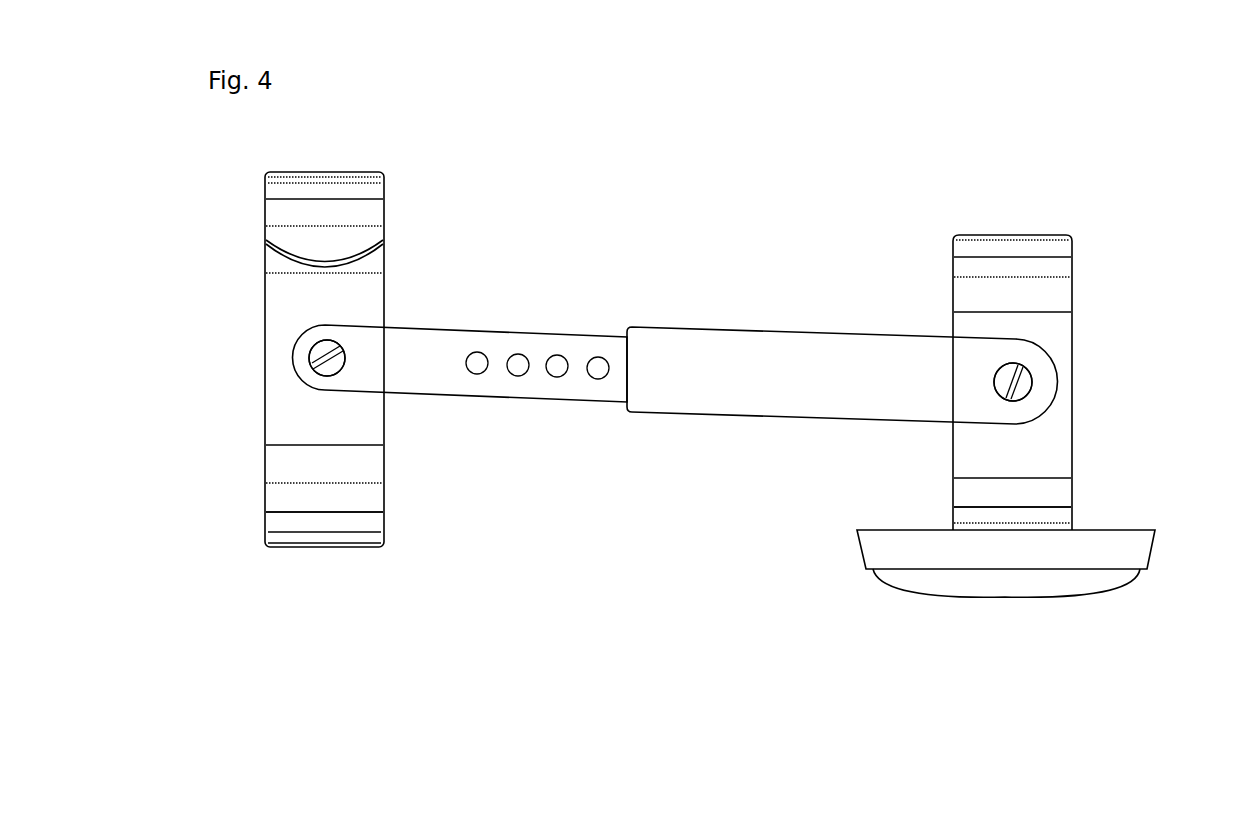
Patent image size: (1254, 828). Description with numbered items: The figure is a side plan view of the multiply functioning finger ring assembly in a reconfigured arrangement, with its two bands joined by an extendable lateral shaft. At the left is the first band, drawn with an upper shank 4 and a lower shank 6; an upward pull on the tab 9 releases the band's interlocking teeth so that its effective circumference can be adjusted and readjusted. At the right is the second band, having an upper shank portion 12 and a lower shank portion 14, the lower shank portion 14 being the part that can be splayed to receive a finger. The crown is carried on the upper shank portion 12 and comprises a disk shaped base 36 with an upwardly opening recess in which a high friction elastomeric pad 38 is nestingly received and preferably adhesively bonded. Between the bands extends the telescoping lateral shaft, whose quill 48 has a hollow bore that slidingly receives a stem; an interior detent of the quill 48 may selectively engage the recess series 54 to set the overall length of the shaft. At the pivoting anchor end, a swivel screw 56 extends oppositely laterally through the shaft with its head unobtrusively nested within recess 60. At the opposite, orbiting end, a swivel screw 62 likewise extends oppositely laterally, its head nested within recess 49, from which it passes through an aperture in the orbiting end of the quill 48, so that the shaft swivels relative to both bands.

The upper shank 4 is at (278, 277).
The lower shank 6 is at (333, 498).
The tab 9 is at (338, 238).
The upper shank portion 12 is at (1023, 493).
The lower shank portion 14 is at (1000, 247).
The base 36 is at (882, 547).
The high friction elastomeric pad 38 is at (1027, 585).
The quill 48 is at (710, 392).
The recess 49 is at (1028, 373).
The recess series 54 is at (409, 350).
The swivel screw 56 is at (316, 343).
The recess 60 is at (331, 371).
The swivel screw 62 is at (1020, 391).